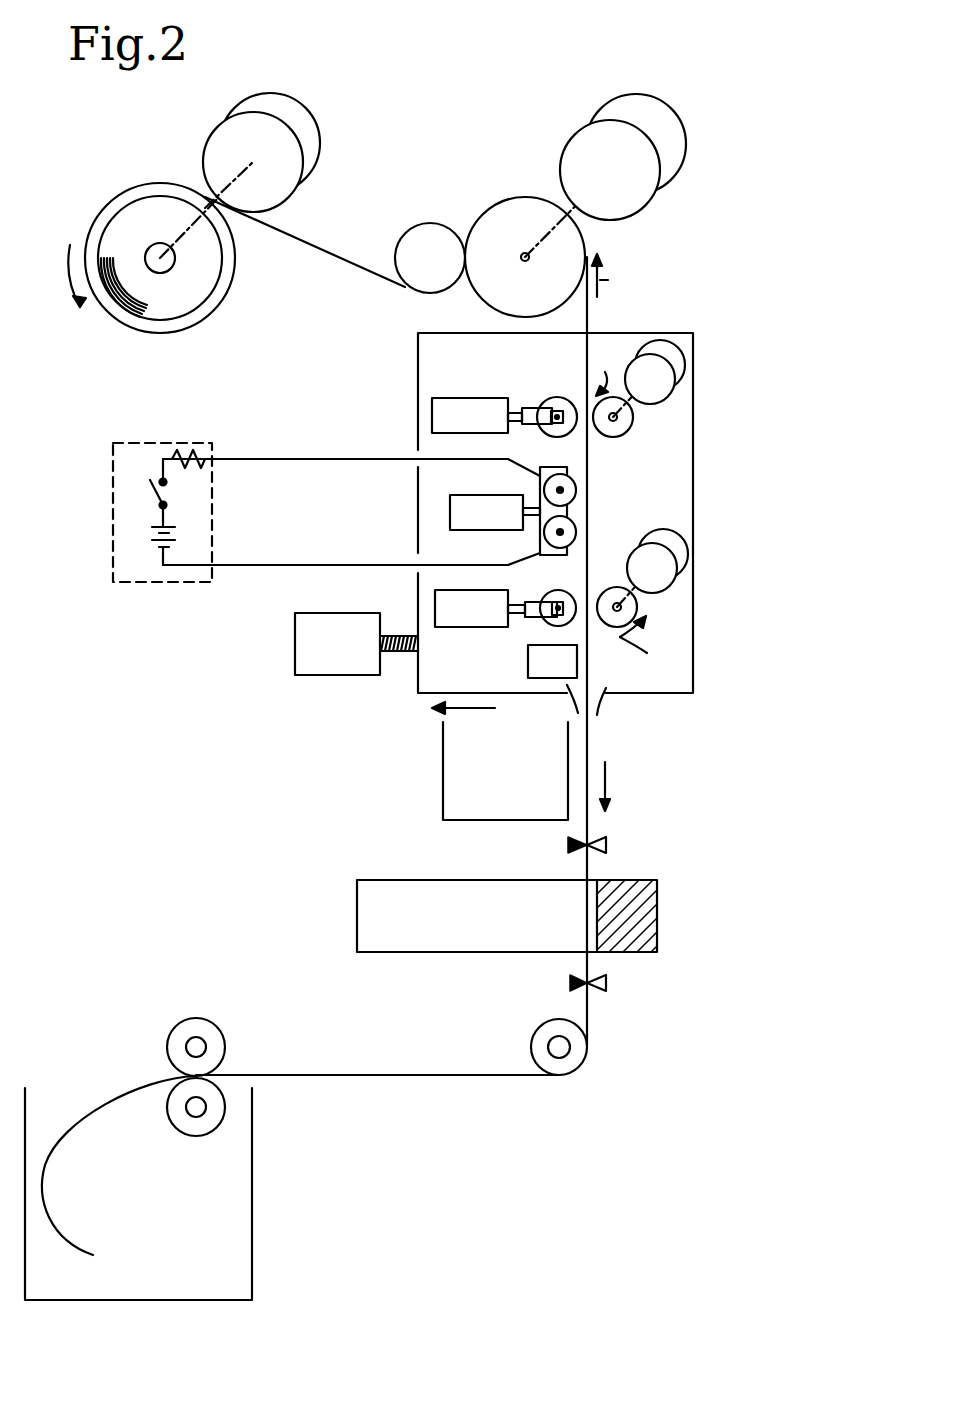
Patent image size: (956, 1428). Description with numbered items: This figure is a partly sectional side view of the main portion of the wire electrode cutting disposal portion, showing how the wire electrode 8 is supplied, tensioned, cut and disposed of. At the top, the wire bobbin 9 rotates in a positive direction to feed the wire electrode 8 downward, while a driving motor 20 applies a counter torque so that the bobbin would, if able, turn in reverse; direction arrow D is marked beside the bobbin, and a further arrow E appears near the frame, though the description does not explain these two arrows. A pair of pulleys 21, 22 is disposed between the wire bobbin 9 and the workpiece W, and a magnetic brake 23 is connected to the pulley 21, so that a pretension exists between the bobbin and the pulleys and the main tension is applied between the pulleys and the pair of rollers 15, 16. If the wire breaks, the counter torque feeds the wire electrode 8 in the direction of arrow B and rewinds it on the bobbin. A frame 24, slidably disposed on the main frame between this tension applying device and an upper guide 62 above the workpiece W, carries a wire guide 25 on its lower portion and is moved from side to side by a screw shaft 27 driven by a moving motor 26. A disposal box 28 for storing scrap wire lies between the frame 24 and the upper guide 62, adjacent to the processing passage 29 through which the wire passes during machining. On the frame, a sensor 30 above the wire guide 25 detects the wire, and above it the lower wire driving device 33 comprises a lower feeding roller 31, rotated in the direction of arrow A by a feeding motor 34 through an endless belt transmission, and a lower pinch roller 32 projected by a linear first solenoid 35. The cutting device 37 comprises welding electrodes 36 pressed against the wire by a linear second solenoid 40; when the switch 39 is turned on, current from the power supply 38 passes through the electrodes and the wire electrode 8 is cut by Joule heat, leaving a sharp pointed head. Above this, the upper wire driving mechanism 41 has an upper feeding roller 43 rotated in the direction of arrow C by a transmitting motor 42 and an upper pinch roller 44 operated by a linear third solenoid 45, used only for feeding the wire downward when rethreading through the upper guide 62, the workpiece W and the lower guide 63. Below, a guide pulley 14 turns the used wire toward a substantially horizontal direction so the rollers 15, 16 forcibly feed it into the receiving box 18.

The wire electrode 8 is at (337, 257).
The wire bobbin 9 is at (130, 222).
The guide pulley 14 is at (560, 1063).
The roller 15 is at (213, 1032).
The roller 16 is at (205, 1125).
The receiving box 18 is at (252, 1247).
The driving motor 20 is at (297, 123).
The pulley 21 is at (495, 217).
The pulley 22 is at (418, 247).
The magnetic brake 23 is at (667, 155).
The frame 24 is at (704, 485).
The wire guide 25 is at (597, 700).
The moving motor 26 is at (322, 660).
The screw shaft 27 is at (402, 655).
The disposal box 28 is at (442, 783).
The processing passage 29 is at (613, 754).
The sensor 30 is at (547, 658).
The lower feeding roller 31 is at (633, 612).
The lower pinch roller 32 is at (547, 622).
The lower wire driving device 33 is at (704, 650).
The feeding motor 34 is at (678, 553).
The first solenoid 35 is at (450, 603).
The welding electrodes 36 is at (574, 488).
The cutting device 37 is at (432, 526).
The power supply 38 is at (178, 533).
The switch 39 is at (157, 492).
The second solenoid 40 is at (457, 505).
The upper wire driving mechanism 41 is at (479, 362).
The transmitting motor 42 is at (678, 365).
The upper feeding roller 43 is at (630, 430).
The upper pinch roller 44 is at (560, 400).
The third solenoid 45 is at (452, 415).
The upper guide 62 is at (610, 843).
The lower guide 63 is at (607, 985).
The arrow A is at (644, 644).
The arrow B is at (611, 275).
The arrow C is at (605, 370).
The direction D is at (67, 273).
The direction E is at (449, 717).
The workpiece W is at (630, 933).